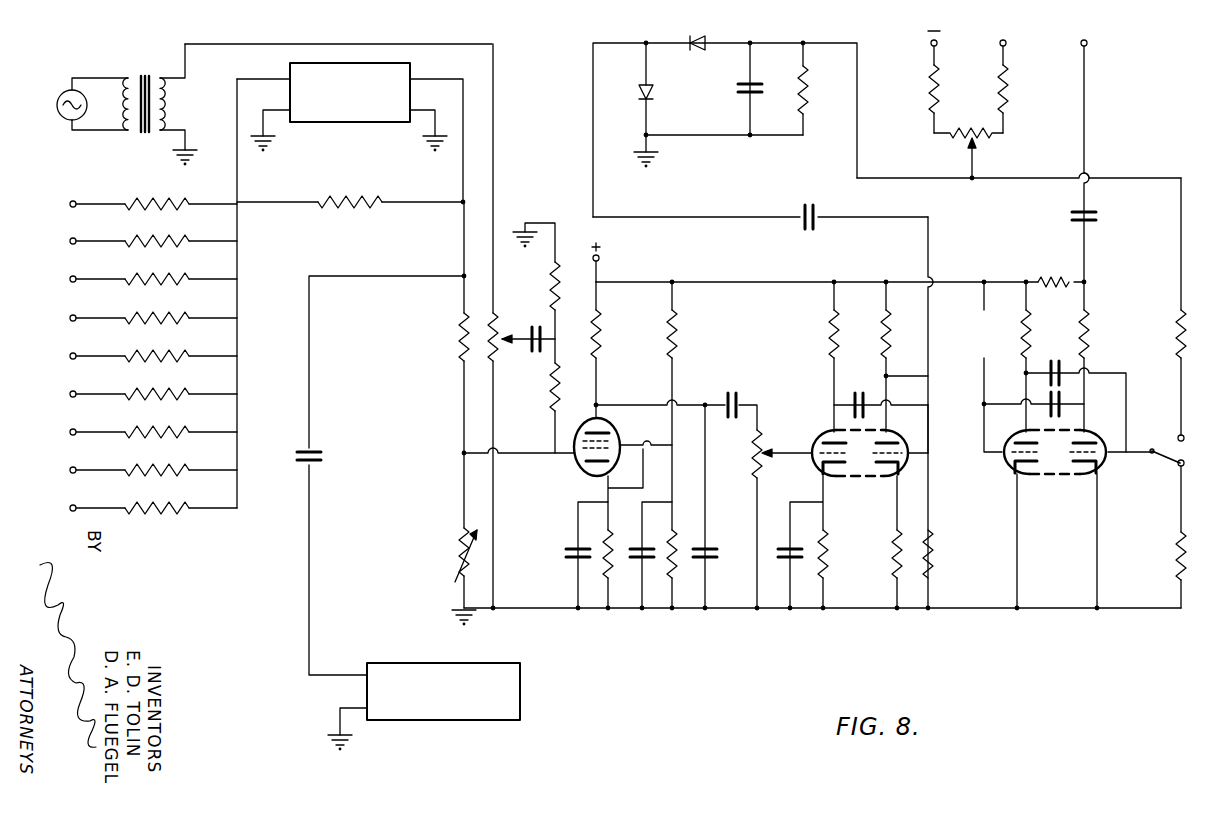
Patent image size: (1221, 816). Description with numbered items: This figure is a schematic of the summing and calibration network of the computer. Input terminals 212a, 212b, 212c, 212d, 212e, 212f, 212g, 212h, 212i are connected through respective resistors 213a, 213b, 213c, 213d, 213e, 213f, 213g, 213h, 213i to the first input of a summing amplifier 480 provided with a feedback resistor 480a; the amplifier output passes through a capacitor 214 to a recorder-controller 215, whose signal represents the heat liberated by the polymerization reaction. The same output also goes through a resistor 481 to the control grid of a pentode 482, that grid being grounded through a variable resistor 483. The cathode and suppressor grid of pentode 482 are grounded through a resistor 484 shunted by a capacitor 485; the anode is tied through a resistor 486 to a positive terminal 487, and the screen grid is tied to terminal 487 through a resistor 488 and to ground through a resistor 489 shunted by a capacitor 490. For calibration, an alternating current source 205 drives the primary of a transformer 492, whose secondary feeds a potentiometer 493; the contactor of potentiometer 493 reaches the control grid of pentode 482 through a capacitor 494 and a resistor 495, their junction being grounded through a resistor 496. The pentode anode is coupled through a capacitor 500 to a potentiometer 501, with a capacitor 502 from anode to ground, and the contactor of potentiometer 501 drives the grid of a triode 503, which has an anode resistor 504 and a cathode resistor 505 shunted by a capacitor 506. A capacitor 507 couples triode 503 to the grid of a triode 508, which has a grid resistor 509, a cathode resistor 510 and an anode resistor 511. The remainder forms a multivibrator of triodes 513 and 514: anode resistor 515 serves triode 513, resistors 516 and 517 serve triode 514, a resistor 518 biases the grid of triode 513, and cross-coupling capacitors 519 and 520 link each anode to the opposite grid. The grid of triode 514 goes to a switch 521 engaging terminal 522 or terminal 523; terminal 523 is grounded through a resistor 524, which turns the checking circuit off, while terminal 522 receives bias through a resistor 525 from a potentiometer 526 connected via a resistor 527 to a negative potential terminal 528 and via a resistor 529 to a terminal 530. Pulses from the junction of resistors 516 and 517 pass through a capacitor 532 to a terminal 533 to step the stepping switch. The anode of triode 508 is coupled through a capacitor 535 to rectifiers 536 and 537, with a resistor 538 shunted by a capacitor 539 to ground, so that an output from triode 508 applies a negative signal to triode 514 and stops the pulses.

The alternating current source 205 is at (60, 95).
The transformer 492 is at (139, 66).
The summing amplifier 480 is at (338, 123).
The feedback resistor 480a is at (354, 206).
The terminal 212a is at (68, 202).
The terminal 212b is at (68, 239).
The terminal 212c is at (68, 277).
The terminal 212d is at (68, 316).
The terminal 212e is at (68, 354).
The terminal 212f is at (68, 392).
The terminal 212g is at (68, 430).
The terminal 212h is at (68, 468).
The terminal 212i is at (68, 506).
The resistor 213a is at (156, 195).
The resistor 213b is at (156, 232).
The resistor 213c is at (156, 270).
The resistor 213d is at (156, 309).
The resistor 213e is at (156, 347).
The resistor 213f is at (156, 385).
The resistor 213g is at (156, 423).
The resistor 213h is at (156, 461).
The resistor 213i is at (156, 499).
The capacitor 214 is at (334, 452).
The recorder-controller 215 is at (446, 722).
The resistor 481 is at (456, 352).
The pentode 482 is at (578, 464).
The variable resistor 483 is at (454, 546).
The resistor 484 is at (601, 542).
The capacitor 485 is at (559, 562).
The resistor 486 is at (605, 314).
The terminal 487 is at (600, 258).
The resistor 488 is at (681, 314).
The resistor 489 is at (682, 566).
The capacitor 490 is at (648, 562).
The potentiometer 493 is at (485, 312).
The capacitor 494 is at (530, 353).
The resistor 495 is at (547, 406).
The resistor 496 is at (549, 286).
The capacitor 500 is at (733, 394).
The potentiometer 501 is at (754, 474).
The capacitor 502 is at (710, 547).
The triode 503 is at (816, 440).
The resistor 504 is at (828, 325).
The resistor 505 is at (828, 534).
The capacitor 506 is at (796, 562).
The capacitor 507 is at (846, 386).
The triode 508 is at (920, 432).
The resistor 509 is at (934, 534).
The resistor 510 is at (890, 566).
The resistor 511 is at (884, 354).
The triode 513 is at (1006, 472).
The triode 514 is at (1104, 432).
The resistor 515 is at (1033, 321).
The resistor 516 is at (1091, 342).
The resistor 517 is at (1054, 276).
The resistor 518 is at (975, 343).
The capacitor 519 is at (1044, 402).
The capacitor 520 is at (1066, 348).
The switch 521 is at (1154, 462).
The terminal 522 is at (1178, 436).
The terminal 523 is at (1176, 468).
The resistor 524 is at (1174, 566).
The resistor 525 is at (1176, 320).
The potentiometer 526 is at (956, 143).
The resistor 527 is at (928, 110).
The negative potential terminal 528 is at (930, 44).
The resistor 529 is at (994, 106).
The terminal 530 is at (1007, 44).
The capacitor 532 is at (1096, 216).
The terminal 533 is at (1088, 46).
The capacitor 535 is at (806, 202).
The rectifier 536 is at (696, 36).
The rectifier 537 is at (644, 96).
The resistor 538 is at (798, 104).
The capacitor 539 is at (734, 92).